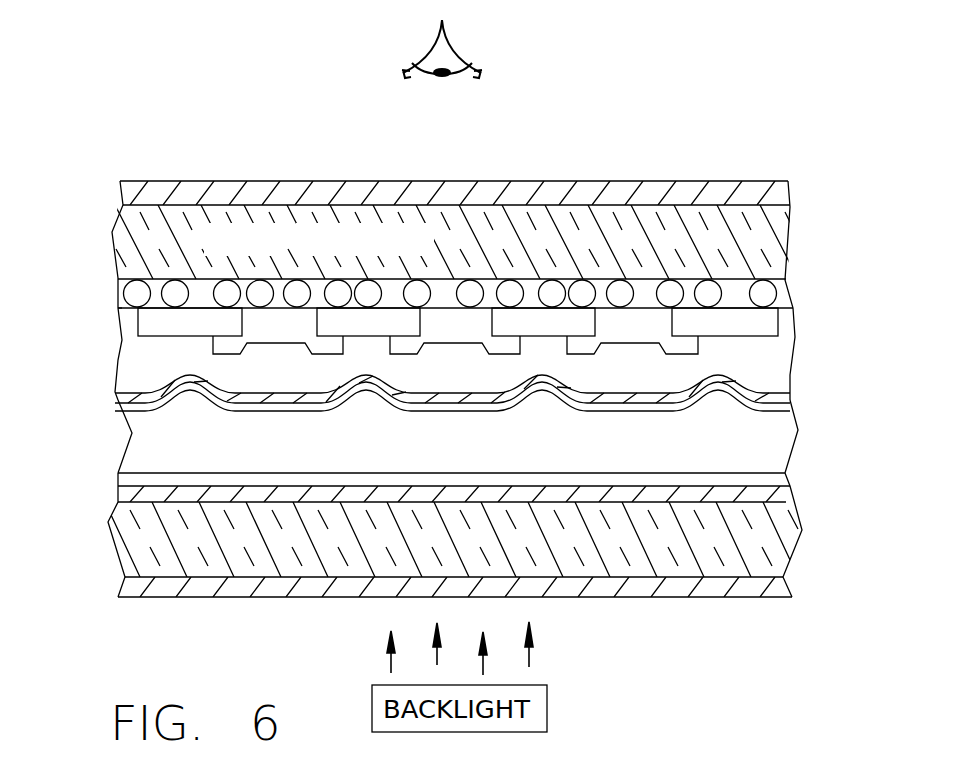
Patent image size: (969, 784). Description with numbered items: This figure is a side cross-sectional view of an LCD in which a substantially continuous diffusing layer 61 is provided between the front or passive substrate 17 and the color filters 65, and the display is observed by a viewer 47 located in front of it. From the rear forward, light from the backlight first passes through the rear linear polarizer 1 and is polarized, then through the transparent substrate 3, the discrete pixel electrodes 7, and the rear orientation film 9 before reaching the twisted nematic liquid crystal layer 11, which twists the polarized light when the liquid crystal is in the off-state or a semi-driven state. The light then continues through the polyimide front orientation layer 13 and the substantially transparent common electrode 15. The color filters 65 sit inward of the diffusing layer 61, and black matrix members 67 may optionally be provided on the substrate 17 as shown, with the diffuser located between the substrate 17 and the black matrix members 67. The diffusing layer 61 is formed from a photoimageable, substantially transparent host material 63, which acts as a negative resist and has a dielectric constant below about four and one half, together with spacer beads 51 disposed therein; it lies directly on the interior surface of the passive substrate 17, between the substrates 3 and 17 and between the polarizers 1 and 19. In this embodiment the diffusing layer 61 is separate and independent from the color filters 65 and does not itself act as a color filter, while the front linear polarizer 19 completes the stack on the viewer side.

The viewer 47 is at (448, 32).
The front linear polarizer 19 is at (791, 184).
The front substrate 17 is at (770, 237).
The diffusing layer 61 is at (783, 294).
The spacer beads 51 is at (135, 288).
The host material 63 is at (645, 288).
The black matrix members 67 is at (330, 320).
The color filters 65 is at (307, 346).
The common electrode 15 is at (705, 380).
The front orientation film 13 is at (773, 395).
The liquid crystal layer 11 is at (773, 448).
The rear orientation film 9 is at (772, 482).
The pixel electrodes 7 is at (120, 493).
The transparent substrate 3 is at (773, 532).
The rear linear polarizer 1 is at (778, 593).